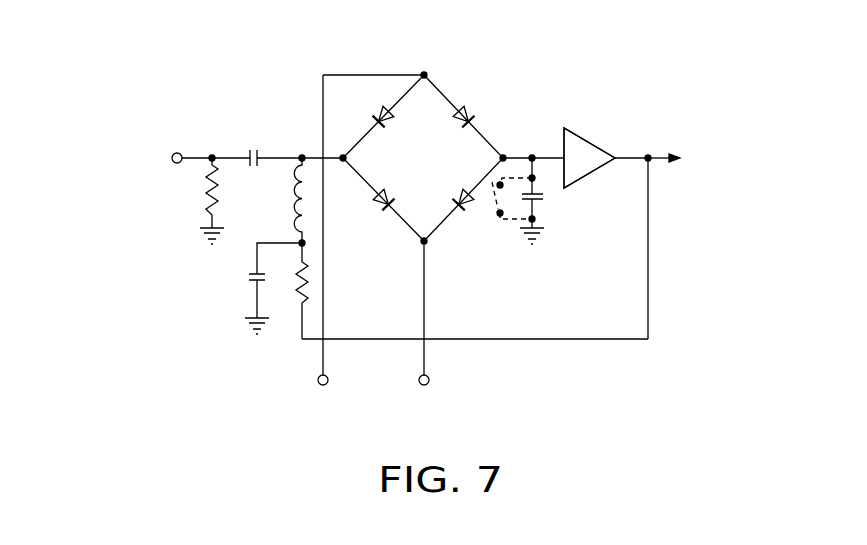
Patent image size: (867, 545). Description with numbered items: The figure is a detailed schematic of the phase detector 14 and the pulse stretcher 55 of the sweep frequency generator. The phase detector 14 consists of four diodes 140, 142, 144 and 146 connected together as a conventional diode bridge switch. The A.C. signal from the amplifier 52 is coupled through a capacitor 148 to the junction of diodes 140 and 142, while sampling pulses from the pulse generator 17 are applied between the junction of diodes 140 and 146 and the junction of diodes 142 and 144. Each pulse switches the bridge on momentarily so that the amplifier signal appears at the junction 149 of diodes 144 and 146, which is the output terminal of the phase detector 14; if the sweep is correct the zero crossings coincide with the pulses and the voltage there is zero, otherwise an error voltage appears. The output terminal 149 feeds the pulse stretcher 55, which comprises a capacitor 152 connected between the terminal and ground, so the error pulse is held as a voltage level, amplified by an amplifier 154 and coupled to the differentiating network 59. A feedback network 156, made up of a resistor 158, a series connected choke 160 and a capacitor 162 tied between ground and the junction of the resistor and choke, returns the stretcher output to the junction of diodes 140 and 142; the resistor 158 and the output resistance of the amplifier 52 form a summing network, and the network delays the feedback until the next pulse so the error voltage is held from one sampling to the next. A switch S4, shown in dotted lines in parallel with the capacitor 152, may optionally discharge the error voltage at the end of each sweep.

The phase detector 14 is at (416, 135).
The diode 140 is at (373, 113).
The diode 142 is at (377, 204).
The diode 144 is at (470, 208).
The diode 146 is at (467, 110).
The capacitor 148 is at (248, 152).
The output terminal 149 is at (505, 156).
The capacitor 152 is at (534, 199).
The amplifier 154 is at (584, 165).
The pulse stretcher 55 is at (587, 121).
The feedback network 156 is at (246, 264).
The resistor 158 is at (288, 291).
The choke 160 is at (296, 196).
The capacitor 162 is at (250, 285).
The switch S4 is at (497, 215).
The amplifier 52 is at (110, 156).
The pulse generator 17 is at (380, 405).
The differentiating network 59 is at (731, 154).